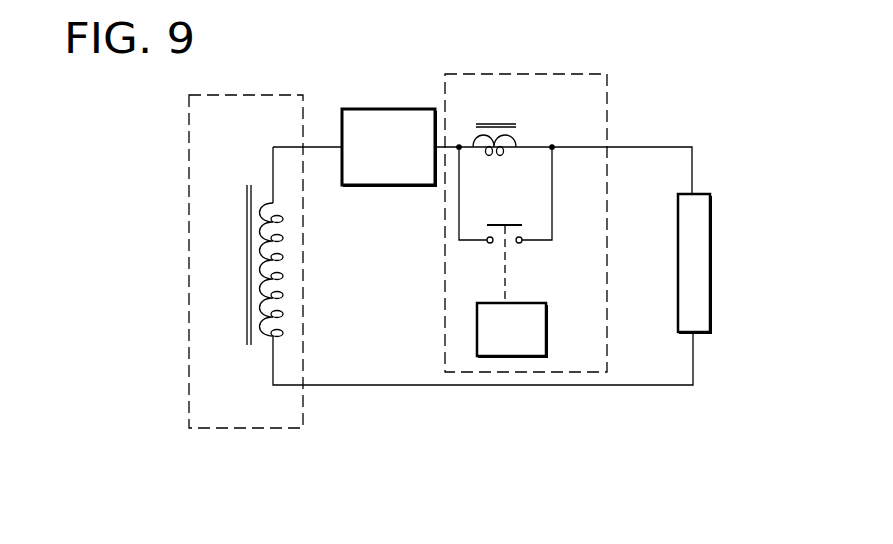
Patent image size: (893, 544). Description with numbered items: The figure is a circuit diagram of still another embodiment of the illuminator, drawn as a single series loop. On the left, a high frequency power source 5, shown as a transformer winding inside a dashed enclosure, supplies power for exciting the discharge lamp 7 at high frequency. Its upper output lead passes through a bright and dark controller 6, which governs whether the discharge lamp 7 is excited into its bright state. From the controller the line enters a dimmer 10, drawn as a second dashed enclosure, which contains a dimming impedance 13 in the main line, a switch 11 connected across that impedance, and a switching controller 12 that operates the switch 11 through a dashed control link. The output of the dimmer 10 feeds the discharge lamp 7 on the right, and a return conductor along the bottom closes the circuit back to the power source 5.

The high frequency power source 5 is at (254, 428).
The bright and dark controller 6 is at (387, 186).
The discharge lamp 7 is at (710, 270).
The dimmer 10 is at (607, 98).
The switch 11 is at (512, 244).
The switching controller 12 is at (547, 322).
The dimming impedance 13 is at (498, 123).